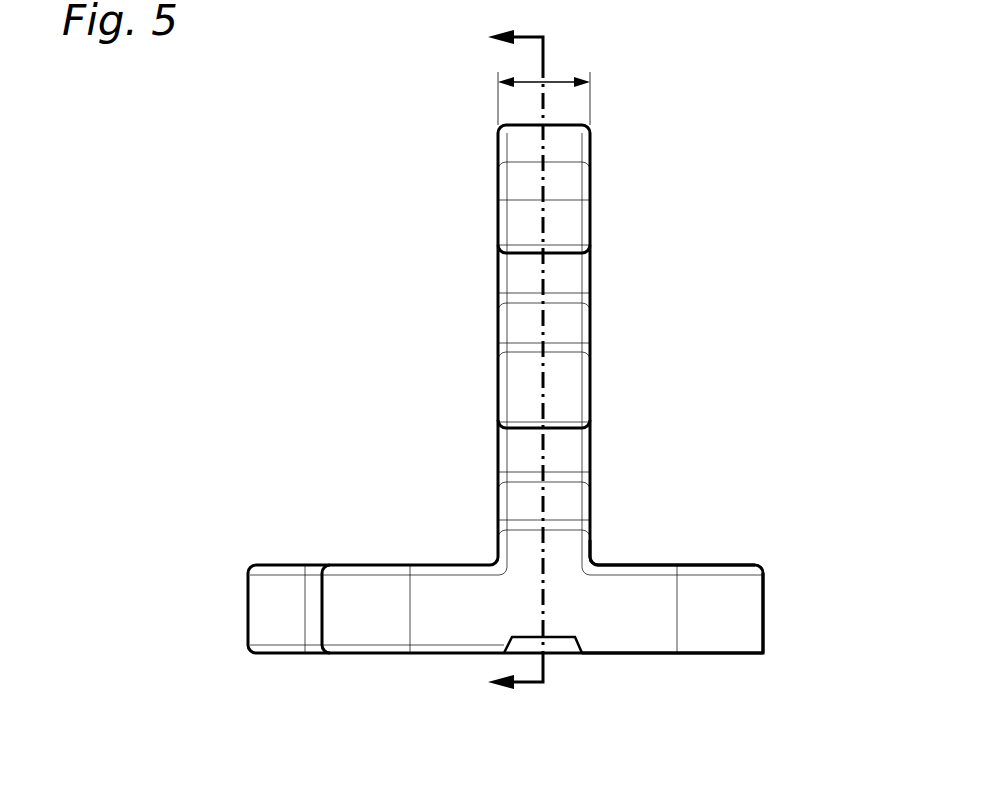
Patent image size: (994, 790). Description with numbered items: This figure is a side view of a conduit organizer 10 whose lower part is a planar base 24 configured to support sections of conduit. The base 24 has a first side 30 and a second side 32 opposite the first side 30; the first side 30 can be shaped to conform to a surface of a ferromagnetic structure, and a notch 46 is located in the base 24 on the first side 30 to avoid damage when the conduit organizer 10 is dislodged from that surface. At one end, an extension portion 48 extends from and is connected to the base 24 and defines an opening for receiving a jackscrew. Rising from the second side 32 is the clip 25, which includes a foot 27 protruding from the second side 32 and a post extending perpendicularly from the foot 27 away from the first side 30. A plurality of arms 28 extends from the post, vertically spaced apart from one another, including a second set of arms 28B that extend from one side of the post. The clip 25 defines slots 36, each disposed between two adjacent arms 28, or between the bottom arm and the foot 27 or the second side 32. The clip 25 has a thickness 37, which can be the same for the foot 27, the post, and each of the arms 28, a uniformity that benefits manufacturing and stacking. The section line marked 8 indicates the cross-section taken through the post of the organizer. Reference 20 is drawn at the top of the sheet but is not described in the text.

The section line 8- 8 is at (503, 361).
The conduit organizer 10 is at (763, 168).
The body 20 is at (505, 326).
The base 24 is at (650, 622).
The clip 25 is at (524, 180).
The foot 27 is at (590, 540).
The arms 28 is at (561, 216).
The second set of arms 28B is at (519, 218).
The first side 30 is at (732, 653).
The second side 32 is at (723, 565).
The slots 36 is at (525, 265).
The thickness 37 is at (553, 80).
The notch 46 is at (557, 643).
The extension portion 48 is at (275, 610).